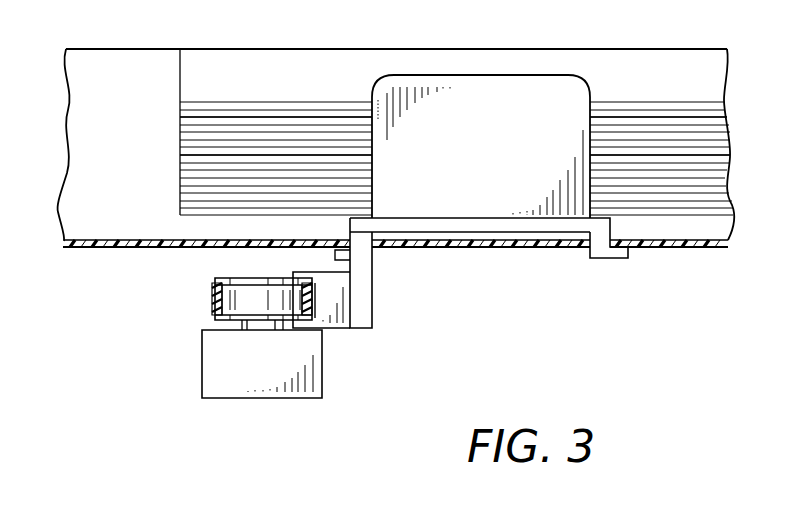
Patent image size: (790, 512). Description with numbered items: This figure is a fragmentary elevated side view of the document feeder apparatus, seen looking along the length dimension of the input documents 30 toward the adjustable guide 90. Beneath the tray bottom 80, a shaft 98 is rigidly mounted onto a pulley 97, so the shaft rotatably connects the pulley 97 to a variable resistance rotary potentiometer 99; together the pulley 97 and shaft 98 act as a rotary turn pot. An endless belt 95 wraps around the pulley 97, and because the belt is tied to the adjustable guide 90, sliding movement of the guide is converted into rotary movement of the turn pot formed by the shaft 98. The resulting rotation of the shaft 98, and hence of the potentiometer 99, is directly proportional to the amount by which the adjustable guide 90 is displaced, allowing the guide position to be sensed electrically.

The input documents 30 is at (168, 147).
The tray bottom 80 is at (88, 241).
The adjustable guide 90 is at (497, 155).
The endless belt 95 is at (212, 291).
The pulley 97 is at (243, 299).
The shaft 98 is at (218, 327).
The variable resistance rotary potentiometer 99 is at (213, 387).